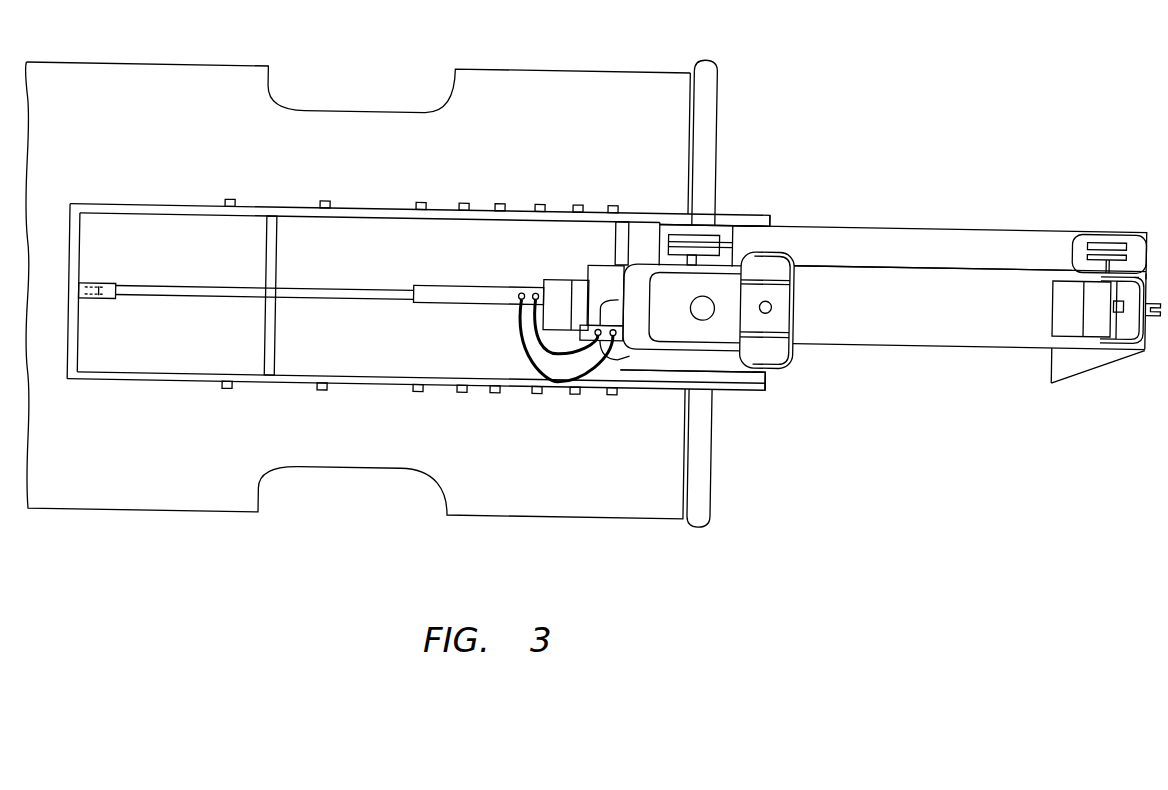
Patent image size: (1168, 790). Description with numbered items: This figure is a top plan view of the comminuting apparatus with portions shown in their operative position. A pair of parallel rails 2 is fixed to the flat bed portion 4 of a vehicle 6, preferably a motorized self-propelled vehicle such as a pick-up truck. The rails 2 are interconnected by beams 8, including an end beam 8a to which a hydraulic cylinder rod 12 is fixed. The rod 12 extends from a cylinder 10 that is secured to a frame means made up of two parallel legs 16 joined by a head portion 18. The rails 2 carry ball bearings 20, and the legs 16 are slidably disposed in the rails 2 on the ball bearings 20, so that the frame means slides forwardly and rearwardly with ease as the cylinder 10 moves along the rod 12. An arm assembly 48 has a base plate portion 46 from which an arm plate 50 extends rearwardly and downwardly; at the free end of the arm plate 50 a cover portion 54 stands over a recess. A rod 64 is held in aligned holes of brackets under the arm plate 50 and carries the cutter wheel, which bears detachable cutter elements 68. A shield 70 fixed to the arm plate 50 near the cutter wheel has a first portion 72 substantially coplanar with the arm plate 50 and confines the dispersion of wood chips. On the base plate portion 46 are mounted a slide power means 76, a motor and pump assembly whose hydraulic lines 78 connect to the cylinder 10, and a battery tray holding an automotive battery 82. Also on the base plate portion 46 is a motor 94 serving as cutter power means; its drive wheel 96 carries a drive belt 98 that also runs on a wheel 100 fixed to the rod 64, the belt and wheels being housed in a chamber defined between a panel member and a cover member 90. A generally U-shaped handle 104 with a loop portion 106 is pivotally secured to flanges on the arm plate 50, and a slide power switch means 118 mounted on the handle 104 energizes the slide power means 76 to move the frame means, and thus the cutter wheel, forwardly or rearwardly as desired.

The rails 2 is at (110, 214).
The flat bed portion 4 is at (215, 151).
The vehicle 6 is at (520, 73).
The beams 8 is at (267, 256).
The end beam 8a is at (70, 254).
The cylinder 10 is at (447, 290).
The hydraulic cylinder rod 12 is at (368, 294).
The legs 16 is at (750, 214).
The head portion 18 is at (770, 374).
The ball bearings 20 is at (327, 209).
The base plate portion 46 is at (588, 268).
The arm assembly 48 is at (946, 342).
The arm plate 50 is at (934, 303).
The cover portion 54 is at (1060, 318).
The rod 64 is at (1128, 233).
The cutter elements 68 is at (1158, 310).
The shield 70 is at (1066, 378).
The first portion 72 is at (1097, 364).
The slide power means 76 is at (630, 350).
The hydraulic lines 78 is at (537, 333).
The automotive battery 82 is at (550, 284).
The cover member 90 is at (938, 285).
The motor 94 is at (685, 319).
The drive wheel 96 is at (682, 217).
The drive belt 98 is at (732, 229).
The wheel 100 is at (1097, 240).
The handle 104 is at (1137, 270).
The loop portion 106 is at (1142, 270).
The slide power switch means 118 is at (1110, 298).